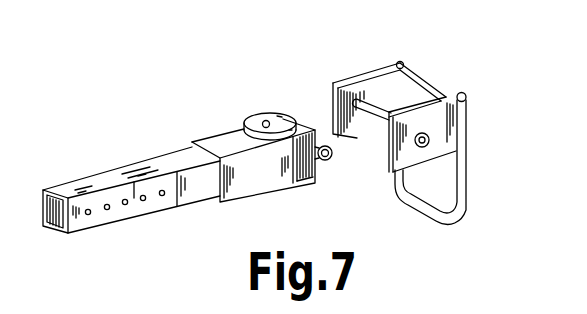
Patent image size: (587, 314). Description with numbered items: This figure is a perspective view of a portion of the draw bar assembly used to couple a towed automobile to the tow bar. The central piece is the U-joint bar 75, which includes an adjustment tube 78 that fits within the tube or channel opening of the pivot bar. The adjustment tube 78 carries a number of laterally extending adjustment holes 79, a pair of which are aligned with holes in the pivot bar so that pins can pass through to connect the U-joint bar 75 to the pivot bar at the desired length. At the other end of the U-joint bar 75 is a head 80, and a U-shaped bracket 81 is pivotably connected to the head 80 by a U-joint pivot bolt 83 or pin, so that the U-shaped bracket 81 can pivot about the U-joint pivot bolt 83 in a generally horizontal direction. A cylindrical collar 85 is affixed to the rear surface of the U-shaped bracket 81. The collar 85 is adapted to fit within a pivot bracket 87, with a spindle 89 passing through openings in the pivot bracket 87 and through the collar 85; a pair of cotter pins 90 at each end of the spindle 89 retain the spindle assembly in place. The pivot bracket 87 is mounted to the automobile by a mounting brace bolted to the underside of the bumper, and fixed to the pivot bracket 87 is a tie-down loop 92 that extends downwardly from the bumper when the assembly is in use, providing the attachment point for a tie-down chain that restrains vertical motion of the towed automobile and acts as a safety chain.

The U-joint bar 75 is at (194, 174).
The adjustment tube 78 is at (131, 203).
The adjustment holes 79 is at (107, 210).
The head 80 is at (269, 138).
The U-shaped bracket 81 is at (278, 107).
The U-joint pivot bolt 83 is at (272, 117).
The cylindrical collar 85 is at (329, 161).
The pivot bracket 87 is at (416, 126).
The spindle 89 is at (368, 128).
The cotter pins 90 is at (426, 143).
The tie-down loop 92 is at (467, 200).